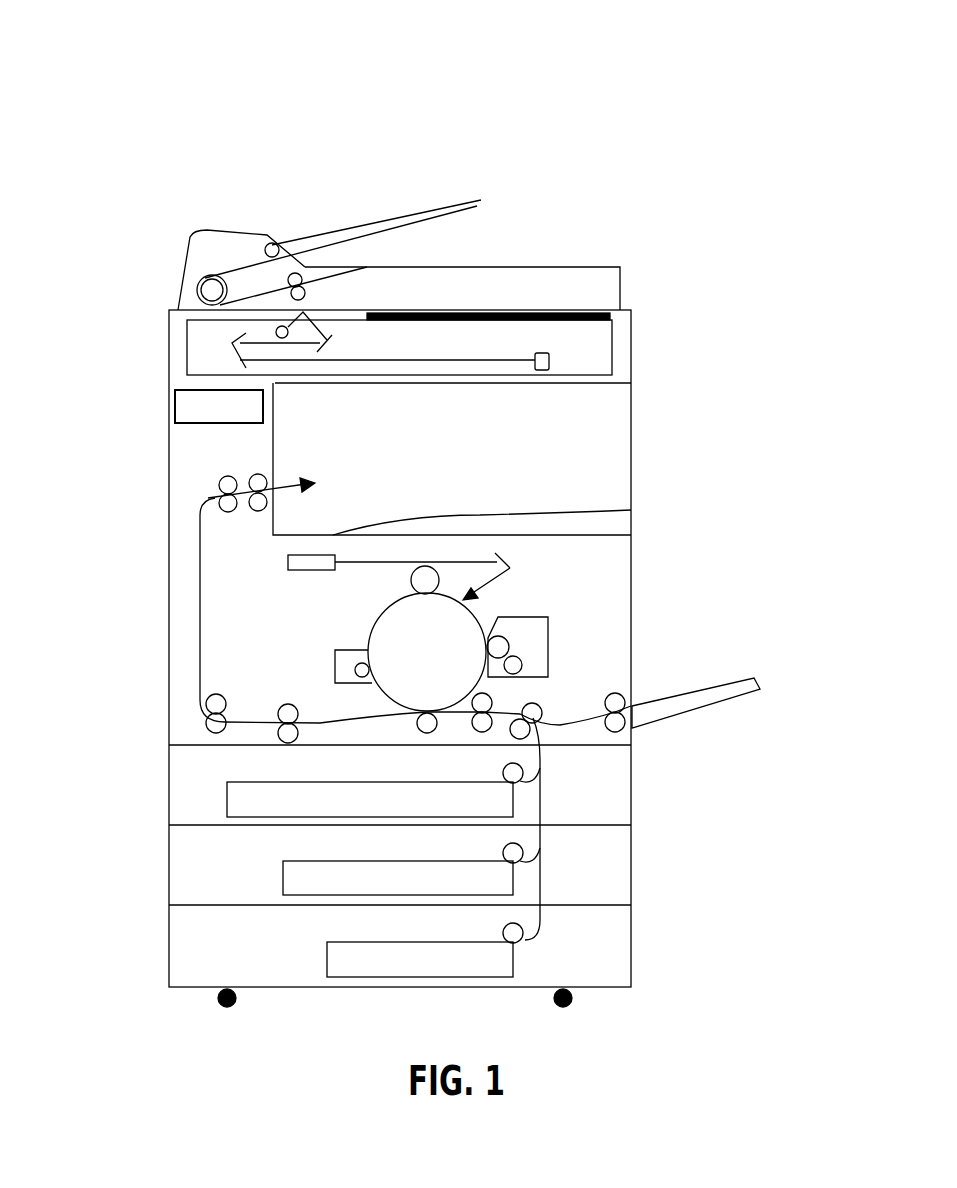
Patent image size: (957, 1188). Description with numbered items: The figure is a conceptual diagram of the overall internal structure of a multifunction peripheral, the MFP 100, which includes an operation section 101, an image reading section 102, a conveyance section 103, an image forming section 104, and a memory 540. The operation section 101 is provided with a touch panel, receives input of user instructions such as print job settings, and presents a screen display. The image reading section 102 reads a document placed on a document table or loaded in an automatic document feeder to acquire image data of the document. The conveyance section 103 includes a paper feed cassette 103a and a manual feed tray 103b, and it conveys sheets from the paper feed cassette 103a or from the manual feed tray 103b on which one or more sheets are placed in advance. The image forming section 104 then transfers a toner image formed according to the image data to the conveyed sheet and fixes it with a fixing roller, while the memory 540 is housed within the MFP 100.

The MFP 100 is at (401, 188).
The operation section 101 is at (510, 310).
The image reading section 102 is at (660, 338).
The image forming section 104 is at (618, 610).
The conveyance section 103 is at (778, 663).
The paper feed cassette 103a is at (237, 755).
The manual feed tray 103b is at (672, 708).
The memory 540 is at (175, 411).